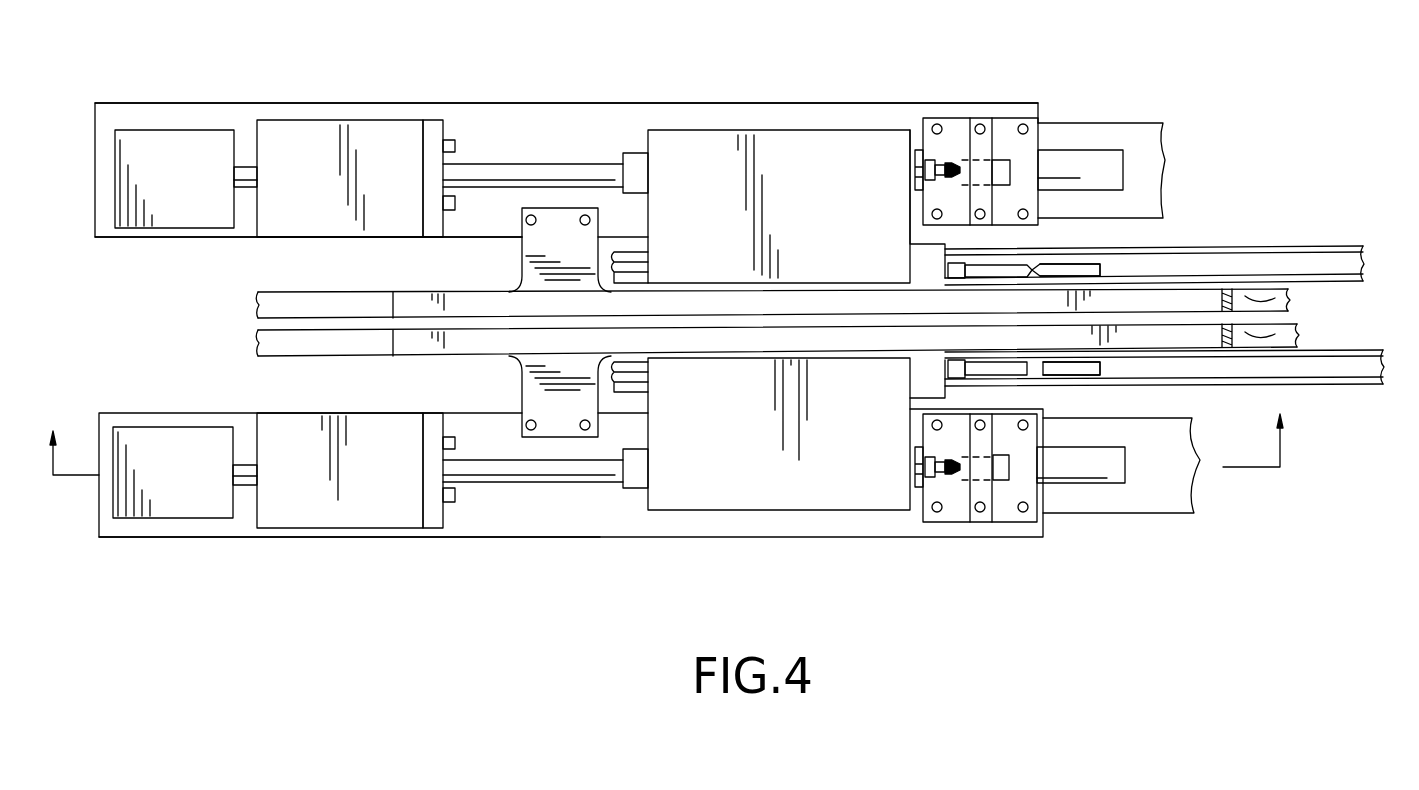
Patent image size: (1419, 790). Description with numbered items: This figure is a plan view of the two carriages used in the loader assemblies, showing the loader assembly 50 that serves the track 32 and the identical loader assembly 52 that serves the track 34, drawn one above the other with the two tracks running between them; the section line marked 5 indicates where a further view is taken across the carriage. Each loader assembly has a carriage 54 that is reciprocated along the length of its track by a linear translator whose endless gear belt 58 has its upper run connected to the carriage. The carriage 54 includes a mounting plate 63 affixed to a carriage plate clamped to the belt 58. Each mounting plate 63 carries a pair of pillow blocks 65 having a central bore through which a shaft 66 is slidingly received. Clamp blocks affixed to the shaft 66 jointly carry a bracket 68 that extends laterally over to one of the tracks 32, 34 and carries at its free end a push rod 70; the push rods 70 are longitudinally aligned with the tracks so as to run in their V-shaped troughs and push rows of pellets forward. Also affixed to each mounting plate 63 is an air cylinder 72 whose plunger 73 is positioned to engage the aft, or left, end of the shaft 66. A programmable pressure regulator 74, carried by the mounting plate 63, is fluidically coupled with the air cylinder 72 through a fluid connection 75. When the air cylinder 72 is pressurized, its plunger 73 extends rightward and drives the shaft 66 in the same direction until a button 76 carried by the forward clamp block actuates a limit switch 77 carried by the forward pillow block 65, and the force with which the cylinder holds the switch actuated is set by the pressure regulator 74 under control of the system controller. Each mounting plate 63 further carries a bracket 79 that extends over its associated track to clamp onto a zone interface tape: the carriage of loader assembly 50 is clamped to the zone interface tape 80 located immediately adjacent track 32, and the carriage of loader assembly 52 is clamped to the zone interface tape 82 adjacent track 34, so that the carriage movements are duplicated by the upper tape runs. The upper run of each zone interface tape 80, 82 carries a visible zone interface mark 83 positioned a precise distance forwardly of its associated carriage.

The loader assembly 50 is at (597, 104).
The loader assembly 52 is at (547, 540).
The carriage 54 is at (409, 104).
The mounting plate 63 is at (530, 112).
The programmable pressure regulator 74 is at (165, 145).
The fluid connection 75 is at (247, 165).
The air cylinder 72 is at (335, 137).
The plunger 73 is at (482, 178).
The bracket 68 is at (840, 150).
The bracket 79 is at (522, 270).
The pillow block 65 is at (1035, 140).
The button 76 is at (940, 163).
The limit switch 77 is at (1000, 163).
The endless gear belt 58 is at (1113, 135).
The shaft 66 is at (1115, 165).
The track 32 is at (1260, 248).
The track 34 is at (1313, 387).
The push rod 70 is at (1100, 262).
The zone interface tape 80 is at (1052, 297).
The zone interface tape 82 is at (1020, 340).
The zone interface mark 83 is at (1297, 333).
The section line 5- 5 is at (661, 447).